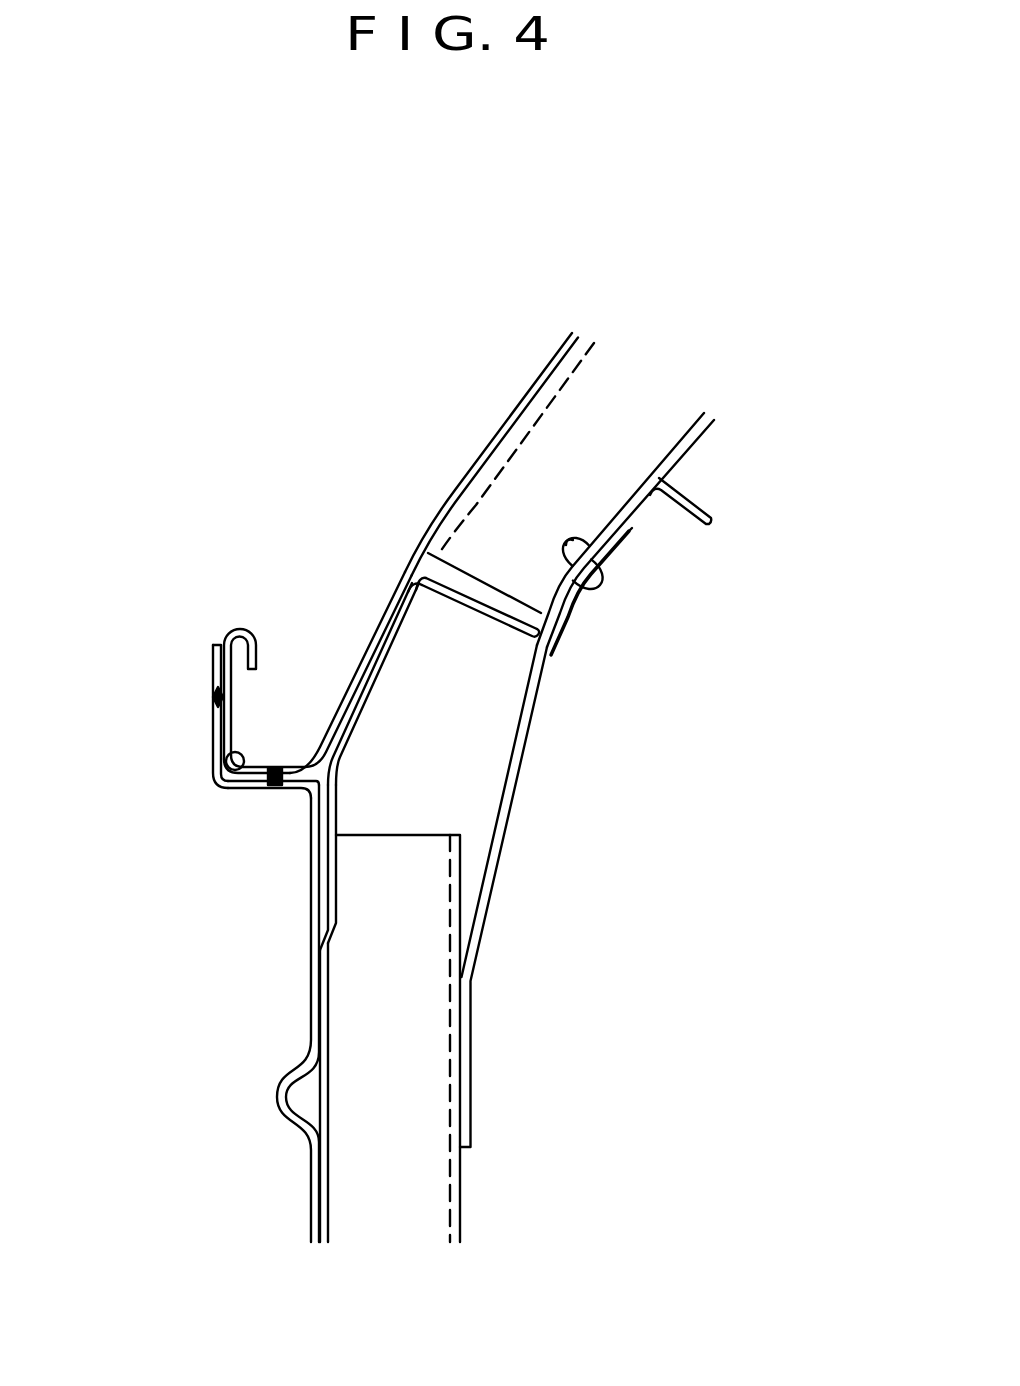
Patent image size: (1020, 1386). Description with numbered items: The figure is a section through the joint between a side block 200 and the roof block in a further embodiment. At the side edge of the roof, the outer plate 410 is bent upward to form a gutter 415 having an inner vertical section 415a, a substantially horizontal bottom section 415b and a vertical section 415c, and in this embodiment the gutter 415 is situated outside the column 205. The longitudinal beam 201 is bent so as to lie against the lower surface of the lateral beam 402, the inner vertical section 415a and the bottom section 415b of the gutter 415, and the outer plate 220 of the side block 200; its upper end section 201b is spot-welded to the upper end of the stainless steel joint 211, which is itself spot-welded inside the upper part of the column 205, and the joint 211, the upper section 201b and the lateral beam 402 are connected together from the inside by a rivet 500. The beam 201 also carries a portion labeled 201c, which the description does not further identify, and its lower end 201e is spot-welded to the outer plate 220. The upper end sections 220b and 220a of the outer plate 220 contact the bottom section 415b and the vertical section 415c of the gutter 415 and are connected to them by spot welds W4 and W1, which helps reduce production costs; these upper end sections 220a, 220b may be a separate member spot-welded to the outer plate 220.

The outer plate 410 is at (525, 392).
The lateral beam 402 is at (617, 397).
The gutter 415 is at (234, 595).
The inner vertical section 415a is at (412, 577).
The bottom section 415b is at (212, 780).
The vertical section 415c is at (238, 683).
The spot weld W1 is at (213, 695).
The spot weld W4 is at (273, 787).
The upper end section 220a is at (207, 737).
The upper end section 220b is at (224, 789).
The outer plate 220 is at (310, 973).
The side block 200 is at (273, 1130).
The longitudinal beam 201 is at (406, 622).
The upper end section 201b is at (645, 512).
The upper portion of pillar outer panel 201c is at (355, 717).
The lower end 201e is at (337, 805).
The joint 211 is at (517, 770).
The rivet 500 is at (603, 588).
The column 205 is at (395, 1205).